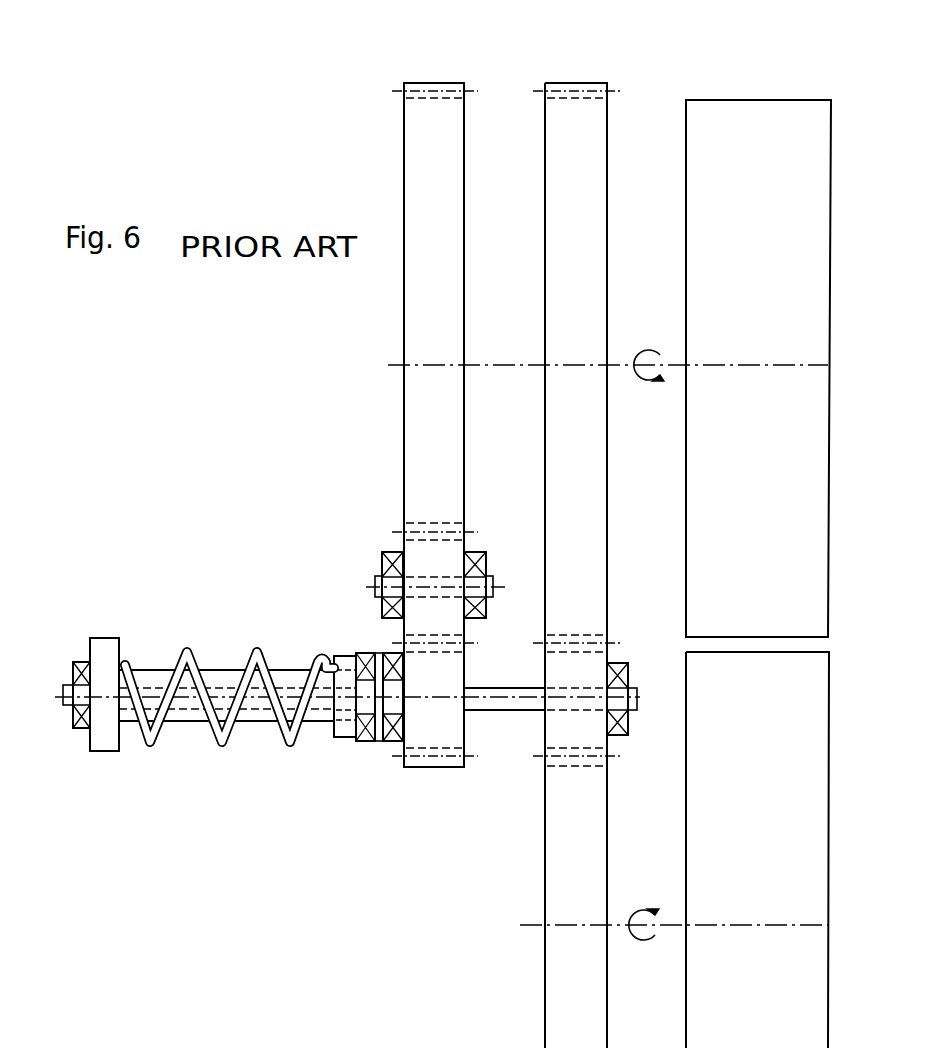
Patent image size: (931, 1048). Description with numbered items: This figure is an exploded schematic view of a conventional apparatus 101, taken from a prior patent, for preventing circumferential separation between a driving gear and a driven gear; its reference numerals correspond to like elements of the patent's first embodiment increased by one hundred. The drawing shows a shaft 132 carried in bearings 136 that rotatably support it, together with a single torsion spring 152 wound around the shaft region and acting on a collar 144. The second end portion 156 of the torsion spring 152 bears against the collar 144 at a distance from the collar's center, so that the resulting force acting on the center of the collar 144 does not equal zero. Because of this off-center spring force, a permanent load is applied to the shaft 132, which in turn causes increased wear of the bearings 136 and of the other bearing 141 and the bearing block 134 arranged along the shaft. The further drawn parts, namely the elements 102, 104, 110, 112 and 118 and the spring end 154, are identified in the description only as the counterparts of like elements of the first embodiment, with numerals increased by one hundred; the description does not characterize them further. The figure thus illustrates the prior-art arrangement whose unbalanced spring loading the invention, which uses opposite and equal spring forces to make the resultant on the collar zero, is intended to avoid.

The conventional apparatus 101 is at (203, 116).
The first drive shaft / rotor column 102 is at (444, 84).
The second drive shaft / rotor column 104 is at (610, 133).
The first drum 110 is at (403, 128).
The second drum 112 is at (587, 84).
The frame / housing 118 is at (750, 110).
The shaft 132 is at (507, 706).
The bearing block 134 is at (345, 738).
The bearings 136 is at (370, 741).
The bearing 141 is at (636, 710).
The collar 144 is at (100, 752).
The single torsion spring 152 is at (192, 653).
The spring end 154 is at (320, 662).
The second end portion 156 is at (128, 655).